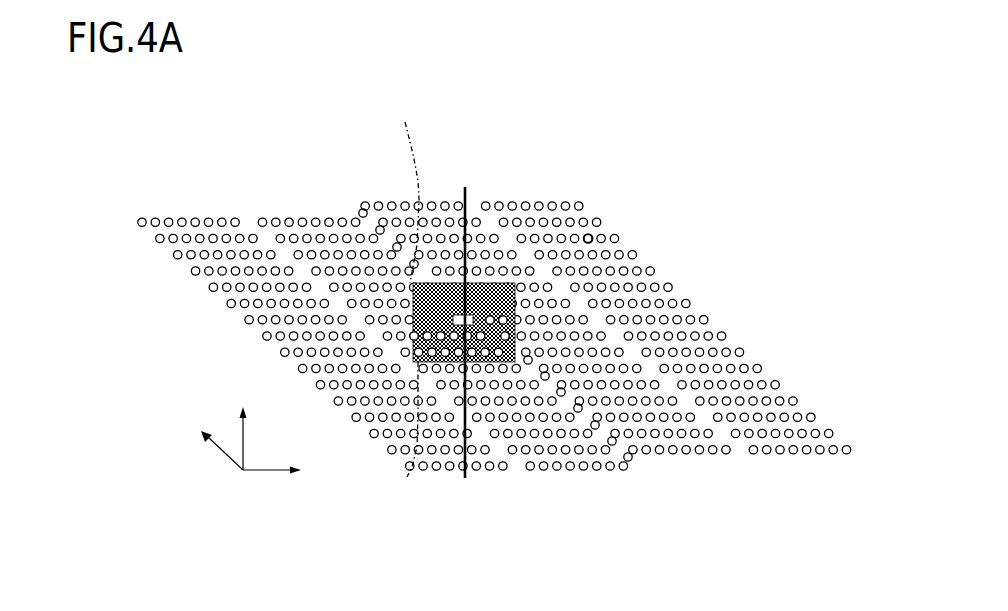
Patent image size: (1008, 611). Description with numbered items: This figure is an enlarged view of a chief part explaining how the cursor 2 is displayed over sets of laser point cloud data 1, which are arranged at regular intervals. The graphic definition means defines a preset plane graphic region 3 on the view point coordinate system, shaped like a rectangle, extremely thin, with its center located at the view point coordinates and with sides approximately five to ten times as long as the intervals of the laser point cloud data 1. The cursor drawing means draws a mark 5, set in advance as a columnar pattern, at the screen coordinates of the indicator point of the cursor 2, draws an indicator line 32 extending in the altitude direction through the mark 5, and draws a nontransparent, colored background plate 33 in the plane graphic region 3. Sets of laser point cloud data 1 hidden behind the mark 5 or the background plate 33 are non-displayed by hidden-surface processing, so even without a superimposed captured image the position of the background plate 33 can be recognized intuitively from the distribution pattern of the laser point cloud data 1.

The laser point cloud data 1 is at (580, 180).
The cursor 2 is at (500, 270).
The plane graphic region 3 is at (561, 268).
The indicator line 32 is at (464, 478).
The background plate 33 is at (404, 188).
The mark 5 is at (407, 477).